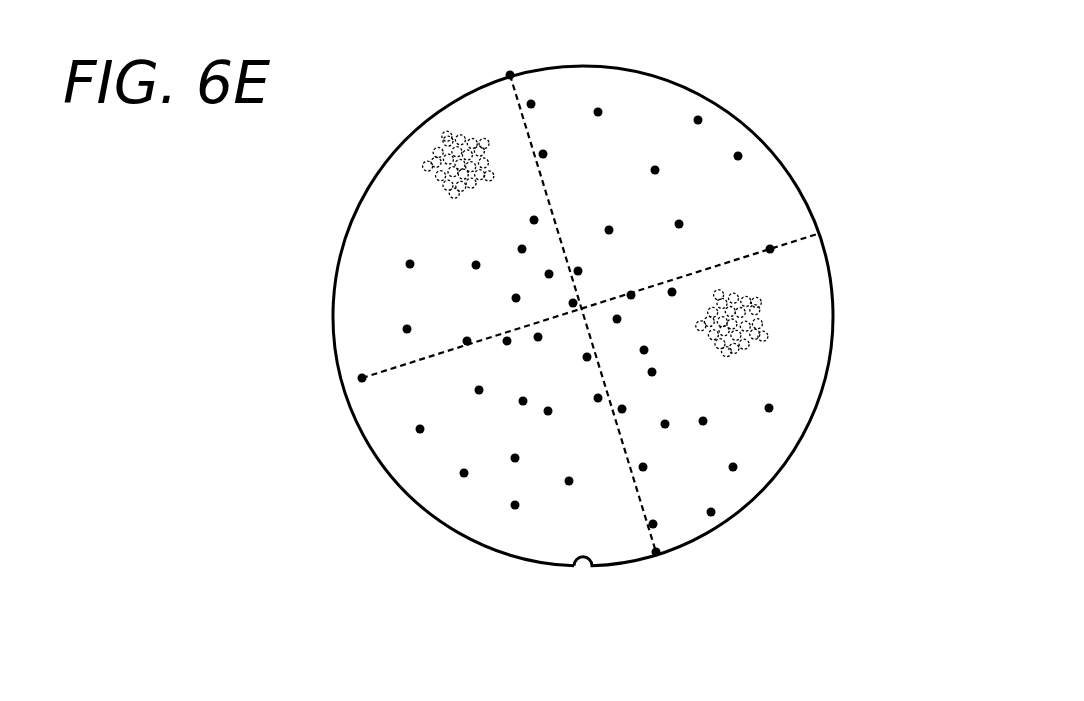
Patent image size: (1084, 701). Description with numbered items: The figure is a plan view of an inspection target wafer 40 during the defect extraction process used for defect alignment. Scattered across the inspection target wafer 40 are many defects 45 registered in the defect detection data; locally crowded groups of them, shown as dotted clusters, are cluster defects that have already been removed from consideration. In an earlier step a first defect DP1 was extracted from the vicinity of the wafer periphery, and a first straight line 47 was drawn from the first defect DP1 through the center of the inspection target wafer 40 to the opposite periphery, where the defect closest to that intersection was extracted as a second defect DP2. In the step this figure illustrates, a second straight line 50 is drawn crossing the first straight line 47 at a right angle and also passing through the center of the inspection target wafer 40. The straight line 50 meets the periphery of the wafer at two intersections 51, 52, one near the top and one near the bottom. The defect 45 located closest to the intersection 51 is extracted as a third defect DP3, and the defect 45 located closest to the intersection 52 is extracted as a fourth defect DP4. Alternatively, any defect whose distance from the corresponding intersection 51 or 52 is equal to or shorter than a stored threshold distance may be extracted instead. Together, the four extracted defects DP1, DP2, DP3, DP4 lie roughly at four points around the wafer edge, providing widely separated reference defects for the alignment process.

The inspection target wafer 40 is at (776, 157).
The defect 45 is at (698, 120).
The first straight line 47 is at (782, 252).
The straight line 50 is at (630, 467).
The intersection 51 is at (510, 75).
The intersection 52 is at (657, 555).
The first defect DP1 is at (362, 378).
The second defect DP2 is at (770, 249).
The third defect DP3 is at (531, 104).
The fourth defect DP4 is at (660, 524).